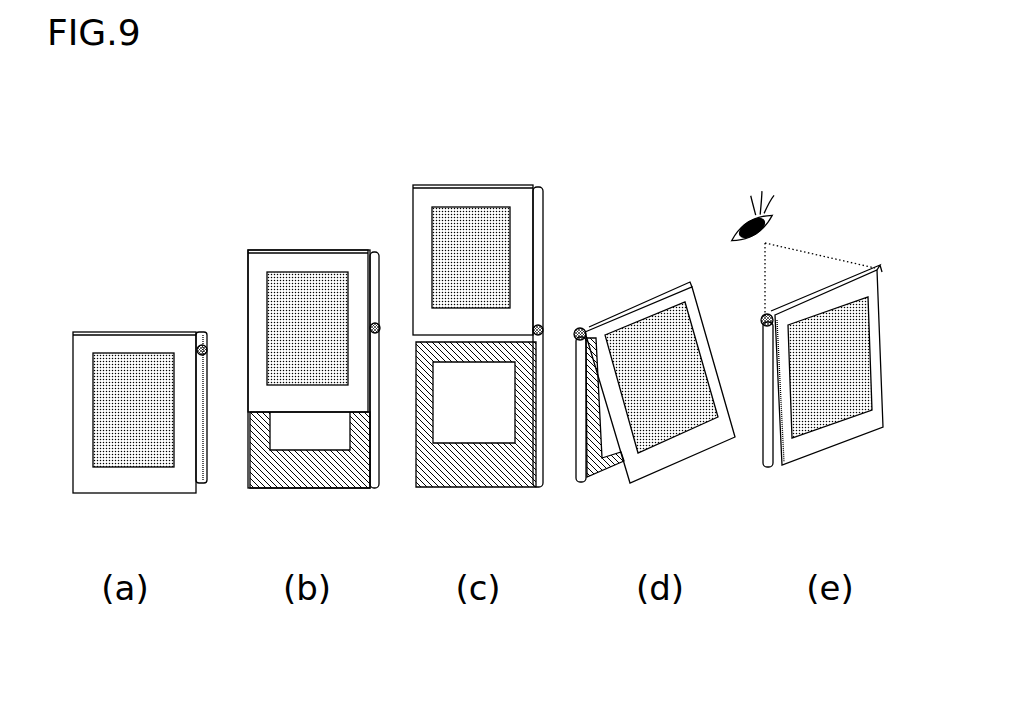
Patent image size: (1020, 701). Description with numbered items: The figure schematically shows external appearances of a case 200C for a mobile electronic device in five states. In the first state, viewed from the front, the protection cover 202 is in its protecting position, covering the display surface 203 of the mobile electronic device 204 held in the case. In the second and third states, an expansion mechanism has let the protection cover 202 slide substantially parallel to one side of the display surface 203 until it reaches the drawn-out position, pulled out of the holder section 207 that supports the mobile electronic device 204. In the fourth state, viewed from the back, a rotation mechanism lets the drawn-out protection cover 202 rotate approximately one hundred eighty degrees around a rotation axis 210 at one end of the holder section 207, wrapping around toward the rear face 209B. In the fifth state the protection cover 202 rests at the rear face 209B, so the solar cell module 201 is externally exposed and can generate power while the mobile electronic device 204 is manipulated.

The case for a mobile electronic device 200C is at (478, 323).
The solar cell module 201 is at (110, 458).
The protection cover 202 is at (118, 338).
The display surface 203 is at (485, 432).
The mobile electronic device 204 is at (322, 465).
The holder section 207 is at (582, 484).
The rear face 209B is at (604, 460).
The rotation axis 210 is at (579, 326).